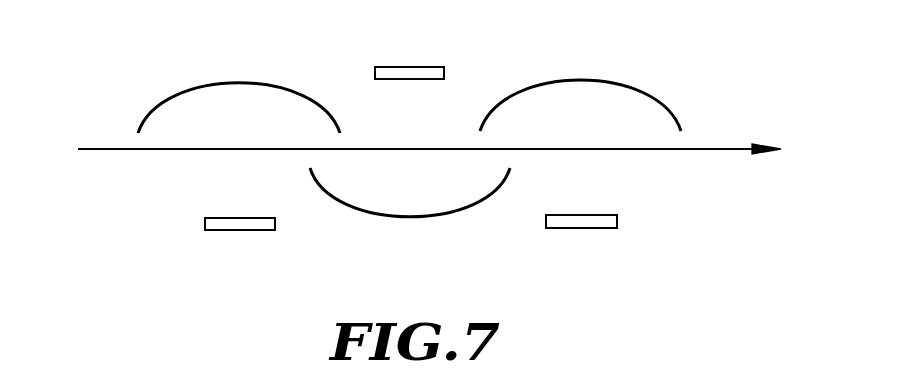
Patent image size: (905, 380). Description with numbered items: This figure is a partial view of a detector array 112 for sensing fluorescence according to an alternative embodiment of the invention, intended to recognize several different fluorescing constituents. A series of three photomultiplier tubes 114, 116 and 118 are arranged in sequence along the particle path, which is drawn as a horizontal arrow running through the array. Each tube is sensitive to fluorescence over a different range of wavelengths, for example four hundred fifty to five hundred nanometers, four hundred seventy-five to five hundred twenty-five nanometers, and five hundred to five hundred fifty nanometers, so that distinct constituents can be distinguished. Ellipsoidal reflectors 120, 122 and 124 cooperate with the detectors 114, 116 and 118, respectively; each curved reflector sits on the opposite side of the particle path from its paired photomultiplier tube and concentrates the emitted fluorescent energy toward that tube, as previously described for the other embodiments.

The detector array 112 is at (170, 73).
The photomultiplier tube 114 is at (238, 232).
The photomultiplier tube 116 is at (408, 66).
The photomultiplier tube 118 is at (583, 230).
The ellipsoidal reflector 120 is at (240, 82).
The ellipsoidal reflector 122 is at (408, 218).
The ellipsoidal reflector 124 is at (582, 80).